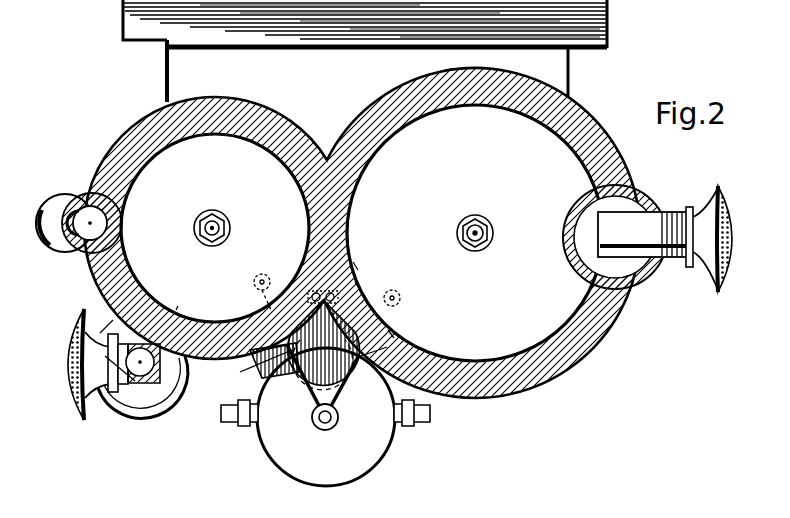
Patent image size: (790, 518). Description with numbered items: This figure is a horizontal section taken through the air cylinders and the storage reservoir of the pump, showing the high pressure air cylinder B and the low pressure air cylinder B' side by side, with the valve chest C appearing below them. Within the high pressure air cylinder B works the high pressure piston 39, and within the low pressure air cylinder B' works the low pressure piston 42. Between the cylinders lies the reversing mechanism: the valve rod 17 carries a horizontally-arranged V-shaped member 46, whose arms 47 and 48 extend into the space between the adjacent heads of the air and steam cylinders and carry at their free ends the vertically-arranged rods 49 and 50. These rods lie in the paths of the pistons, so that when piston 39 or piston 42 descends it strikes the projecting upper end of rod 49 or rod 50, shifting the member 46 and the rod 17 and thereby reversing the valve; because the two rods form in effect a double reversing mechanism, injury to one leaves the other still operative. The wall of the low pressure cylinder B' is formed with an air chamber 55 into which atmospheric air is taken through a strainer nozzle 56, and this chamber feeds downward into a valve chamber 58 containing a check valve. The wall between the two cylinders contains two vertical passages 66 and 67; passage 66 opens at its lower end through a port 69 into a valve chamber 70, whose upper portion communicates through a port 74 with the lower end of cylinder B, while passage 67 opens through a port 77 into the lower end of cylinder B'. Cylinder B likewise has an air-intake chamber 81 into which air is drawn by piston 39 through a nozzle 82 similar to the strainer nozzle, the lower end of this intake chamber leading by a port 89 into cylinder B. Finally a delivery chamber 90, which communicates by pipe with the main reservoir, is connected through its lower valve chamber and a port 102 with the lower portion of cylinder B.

The high pressure air cylinder B is at (362, 233).
The low pressure air cylinder B' is at (466, 197).
The high pressure piston 39 is at (215, 228).
The low pressure piston 42 is at (475, 233).
The delivery chamber 90 is at (81, 252).
The port 102 is at (112, 234).
The air chamber 55 is at (655, 194).
The strainer nozzle 56 is at (724, 193).
The nozzle 82 is at (66, 376).
The air-intake chamber 81 is at (165, 396).
The arm 47 is at (258, 362).
The valve chamber 70 is at (292, 372).
The vertical passage 67 is at (300, 278).
The vertically-arranged rod 49 is at (255, 280).
The port 89 is at (178, 310).
The port 74 is at (266, 303).
The valve chamber 58 is at (358, 266).
The port 77 is at (360, 284).
The vertical passage 66 is at (336, 296).
The vertically-arranged rod 50 is at (402, 298).
The port 69 is at (400, 331).
The V-shaped member 46 is at (306, 401).
The arm 48 is at (350, 398).
The valve rod 17 is at (335, 424).
The valve chest C is at (388, 438).